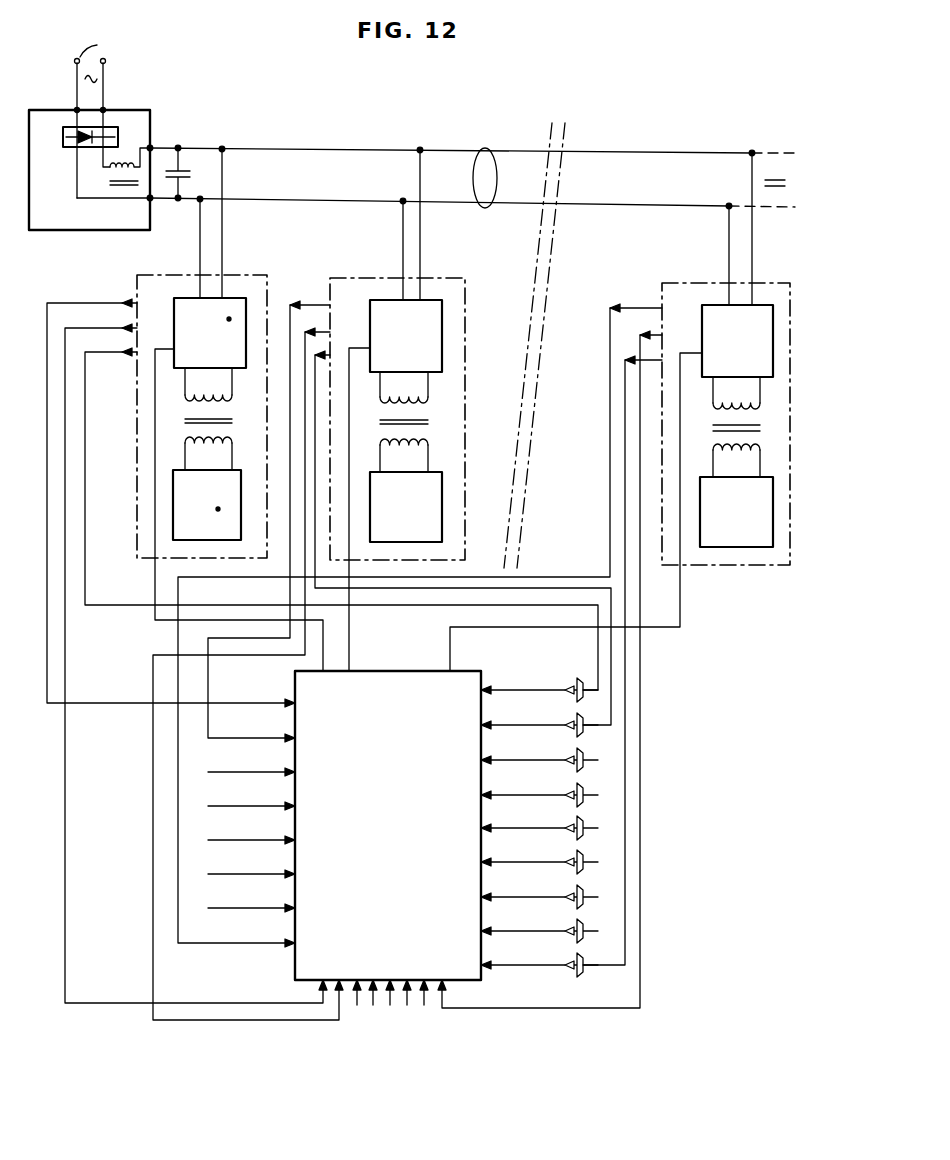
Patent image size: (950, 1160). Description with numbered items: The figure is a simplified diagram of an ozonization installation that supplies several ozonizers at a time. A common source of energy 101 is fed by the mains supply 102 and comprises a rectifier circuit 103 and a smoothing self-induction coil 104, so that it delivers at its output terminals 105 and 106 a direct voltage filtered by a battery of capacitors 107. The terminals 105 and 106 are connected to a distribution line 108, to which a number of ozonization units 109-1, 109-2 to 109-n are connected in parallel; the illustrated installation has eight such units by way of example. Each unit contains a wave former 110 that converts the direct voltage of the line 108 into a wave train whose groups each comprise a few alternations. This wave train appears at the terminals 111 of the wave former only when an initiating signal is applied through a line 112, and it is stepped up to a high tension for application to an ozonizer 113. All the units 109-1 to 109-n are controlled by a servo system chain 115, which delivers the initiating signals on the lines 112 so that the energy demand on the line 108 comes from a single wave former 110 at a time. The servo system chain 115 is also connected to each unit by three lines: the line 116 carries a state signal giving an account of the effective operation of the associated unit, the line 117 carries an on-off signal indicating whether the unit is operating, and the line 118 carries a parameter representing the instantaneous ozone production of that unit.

The common source of energy 101 is at (153, 112).
The mains supply 102 is at (92, 67).
The rectifier circuit 103 is at (62, 136).
The smoothing self-induction coil 104 is at (113, 170).
The output terminal 105 is at (152, 148).
The output terminal 106 is at (152, 199).
The battery of capacitors 107 is at (185, 168).
The distribution line 108 is at (485, 149).
The ozonization unit 109-1 is at (207, 447).
The ozonization unit 109-2 is at (345, 278).
The ozonization unit 109-n is at (676, 283).
The wave former 110 is at (210, 333).
The terminals of the wave former 111 is at (187, 369).
The line 112 is at (137, 411).
The ozonizer 113 is at (207, 505).
The servo system chain 115 is at (470, 671).
The line 116 is at (65, 302).
The line 117 is at (100, 326).
The line 118 is at (117, 352).